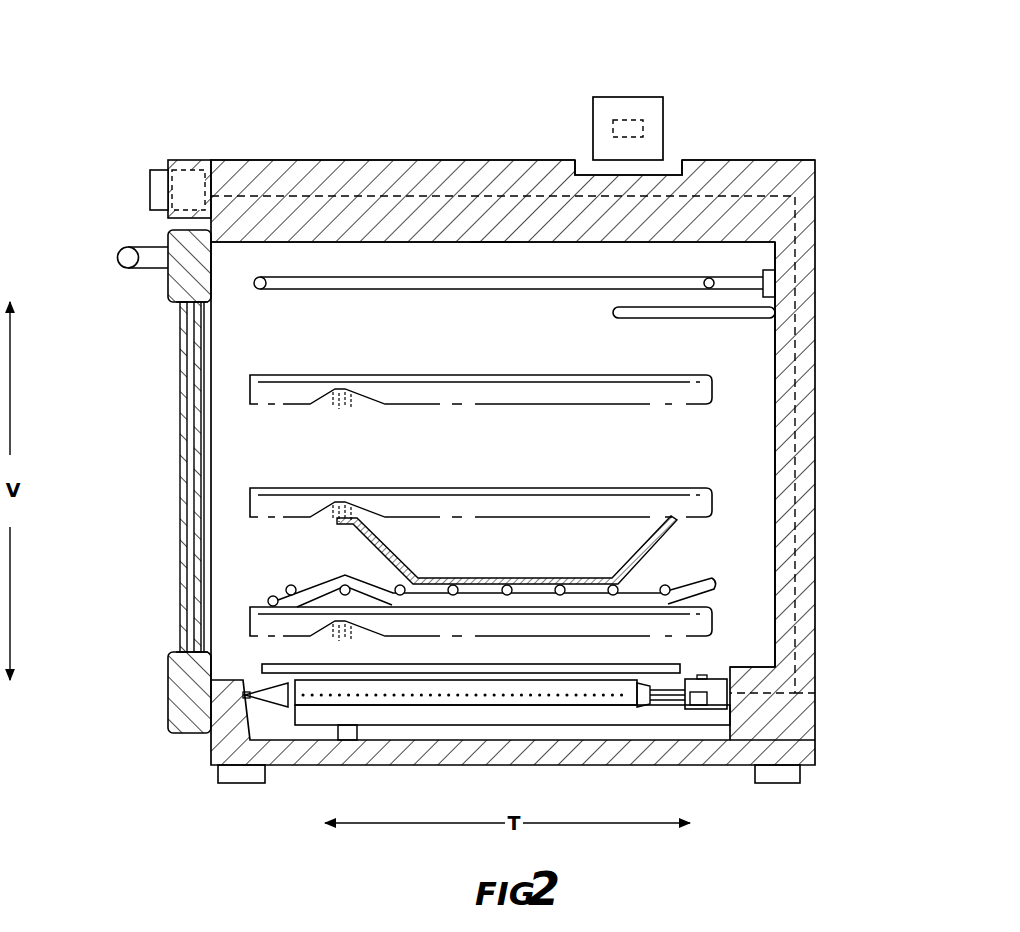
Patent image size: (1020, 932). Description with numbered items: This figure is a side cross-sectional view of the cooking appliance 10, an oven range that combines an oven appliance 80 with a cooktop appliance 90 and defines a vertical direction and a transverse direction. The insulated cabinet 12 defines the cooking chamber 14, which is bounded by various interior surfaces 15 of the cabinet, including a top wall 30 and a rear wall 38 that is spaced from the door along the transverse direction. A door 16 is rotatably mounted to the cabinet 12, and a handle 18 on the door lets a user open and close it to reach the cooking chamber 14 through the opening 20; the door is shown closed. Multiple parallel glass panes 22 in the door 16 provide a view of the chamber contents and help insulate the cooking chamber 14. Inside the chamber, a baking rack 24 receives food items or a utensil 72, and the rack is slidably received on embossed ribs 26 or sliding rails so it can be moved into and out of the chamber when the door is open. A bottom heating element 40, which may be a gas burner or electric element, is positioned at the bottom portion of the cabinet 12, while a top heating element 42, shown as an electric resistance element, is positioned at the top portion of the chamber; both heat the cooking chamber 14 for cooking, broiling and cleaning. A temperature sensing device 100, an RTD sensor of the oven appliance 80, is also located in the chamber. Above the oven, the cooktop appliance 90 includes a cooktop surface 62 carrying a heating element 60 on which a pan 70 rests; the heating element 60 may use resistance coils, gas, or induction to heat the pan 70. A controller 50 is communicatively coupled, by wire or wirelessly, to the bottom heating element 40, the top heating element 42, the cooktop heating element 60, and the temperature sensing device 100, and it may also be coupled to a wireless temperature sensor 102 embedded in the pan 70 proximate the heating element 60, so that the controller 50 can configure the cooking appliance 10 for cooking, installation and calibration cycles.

The cooking appliance 10 is at (829, 132).
The insulated cabinet 12 is at (816, 693).
The cooking chamber 14 is at (724, 459).
The interior surfaces 15 is at (497, 247).
The door 16 is at (172, 286).
The handle 18 is at (124, 257).
The opening 20 is at (243, 392).
The glass panes 22 is at (180, 522).
The baking rack 24 is at (313, 586).
The embossed ribs 26 is at (690, 620).
The top wall 30 is at (358, 250).
The rear wall 38 is at (776, 381).
The bottom heating element 40 is at (665, 712).
The top heating element 42 is at (710, 268).
The controller 50 is at (185, 167).
The heating element 60 is at (585, 170).
The cooktop surface 62 is at (285, 158).
The pan 70 is at (664, 112).
The utensil 72 is at (352, 527).
The oven appliance 80 is at (868, 227).
The cooktop appliance 90 is at (723, 155).
The temperature sensing device 100 is at (673, 322).
The wireless temperature sensor 102 is at (628, 120).